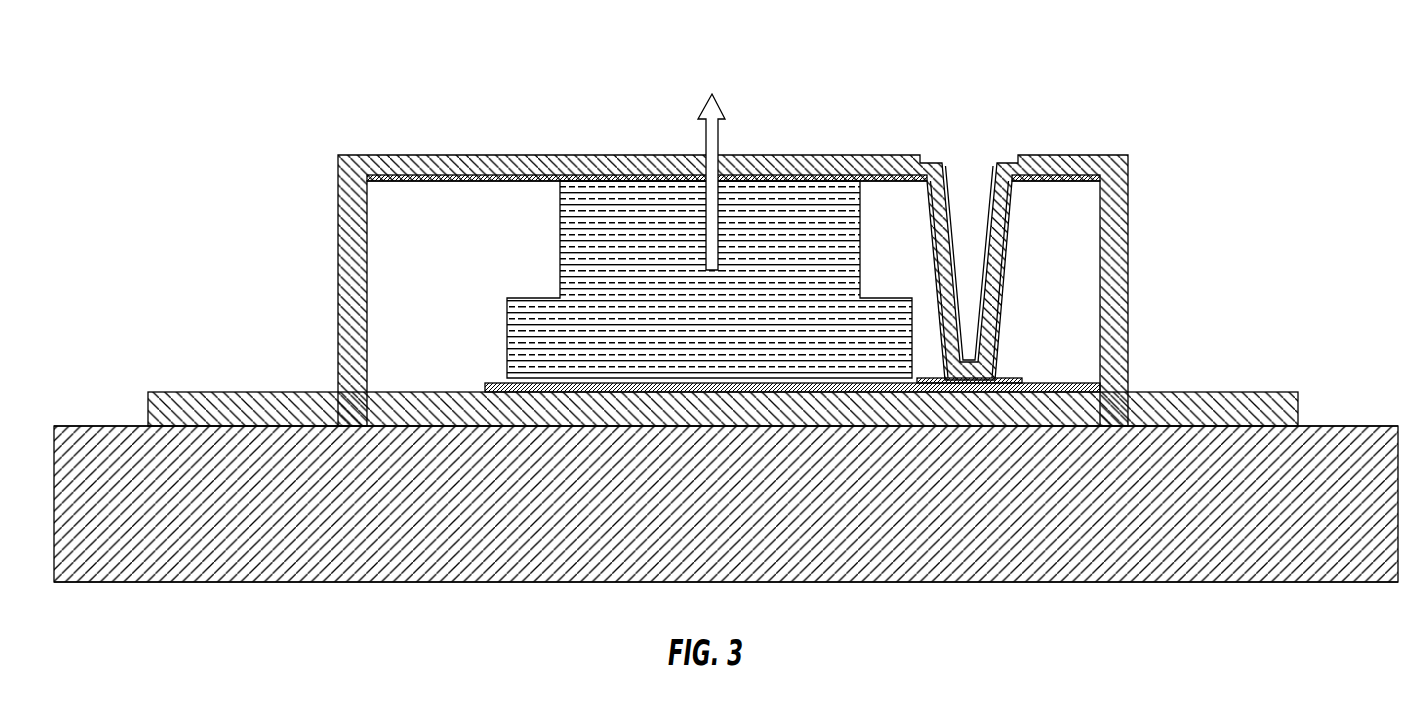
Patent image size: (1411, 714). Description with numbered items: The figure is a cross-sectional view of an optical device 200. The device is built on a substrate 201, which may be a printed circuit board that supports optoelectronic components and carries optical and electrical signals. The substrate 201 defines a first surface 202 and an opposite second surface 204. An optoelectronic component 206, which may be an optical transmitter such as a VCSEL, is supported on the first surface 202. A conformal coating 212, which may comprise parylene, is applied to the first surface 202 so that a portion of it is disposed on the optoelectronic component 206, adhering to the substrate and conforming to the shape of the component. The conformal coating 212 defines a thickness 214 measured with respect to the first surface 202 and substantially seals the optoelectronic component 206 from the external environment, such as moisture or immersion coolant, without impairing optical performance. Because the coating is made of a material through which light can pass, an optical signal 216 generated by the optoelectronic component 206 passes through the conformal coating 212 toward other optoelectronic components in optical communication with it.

The optical device 200 is at (364, 76).
The substrate 201 is at (52, 450).
The first surface 202 is at (1343, 423).
The second surface 204 is at (464, 586).
The optoelectronic component 206 is at (546, 248).
The conformal coating 212 is at (846, 151).
The thickness 214 is at (338, 175).
The optical signal 216 is at (700, 213).